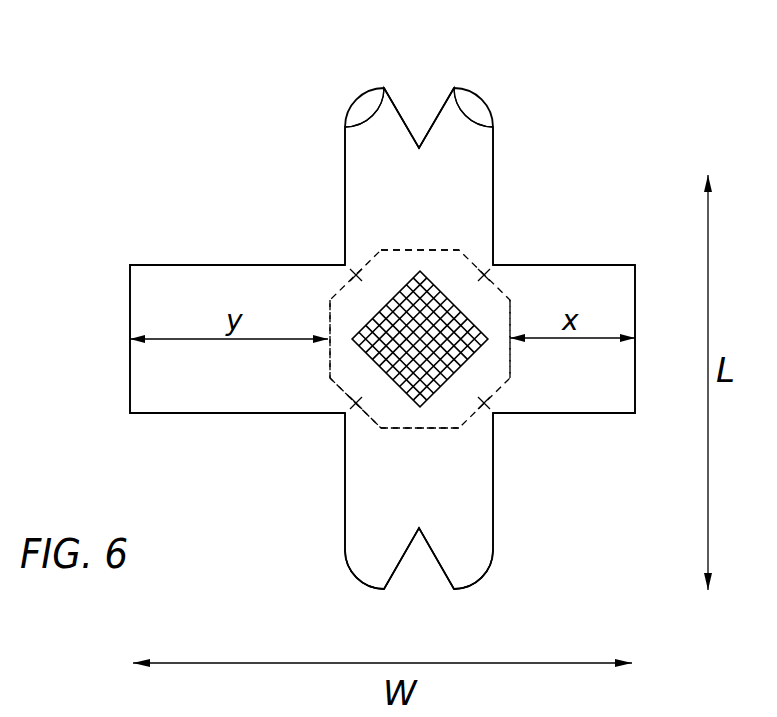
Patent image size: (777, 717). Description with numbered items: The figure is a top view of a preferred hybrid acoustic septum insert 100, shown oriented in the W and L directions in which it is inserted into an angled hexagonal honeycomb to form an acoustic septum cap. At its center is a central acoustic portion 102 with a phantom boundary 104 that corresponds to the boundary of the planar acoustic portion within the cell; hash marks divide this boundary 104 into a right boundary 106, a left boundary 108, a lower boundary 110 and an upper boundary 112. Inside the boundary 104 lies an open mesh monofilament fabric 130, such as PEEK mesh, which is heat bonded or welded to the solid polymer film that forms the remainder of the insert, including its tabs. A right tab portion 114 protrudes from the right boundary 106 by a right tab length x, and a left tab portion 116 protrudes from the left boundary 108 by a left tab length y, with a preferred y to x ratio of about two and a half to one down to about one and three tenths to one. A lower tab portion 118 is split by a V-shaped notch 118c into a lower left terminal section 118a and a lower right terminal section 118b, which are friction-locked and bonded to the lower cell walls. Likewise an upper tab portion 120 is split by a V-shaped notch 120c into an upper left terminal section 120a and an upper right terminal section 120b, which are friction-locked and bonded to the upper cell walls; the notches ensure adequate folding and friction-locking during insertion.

The acoustic septum insert 100 is at (592, 178).
The central acoustic portion 102 is at (482, 312).
The boundary 104 is at (388, 430).
The right boundary 106 is at (509, 355).
The left boundary 108 is at (330, 327).
The lower boundary 110 is at (422, 430).
The upper boundary 112 is at (428, 250).
The right tab portion 114 is at (607, 288).
The left tab portion 116 is at (175, 287).
The lower tab portion 118 is at (452, 510).
The lower left terminal section 118a is at (377, 555).
The lower right terminal section 118b is at (463, 553).
The V-shaped notch 118c is at (424, 564).
The upper tab portion 120 is at (450, 147).
The upper left terminal section 120a is at (372, 128).
The upper right terminal section 120b is at (460, 107).
The V-shaped notch 120c is at (416, 104).
The open mesh monofilament fabric 130 is at (468, 353).